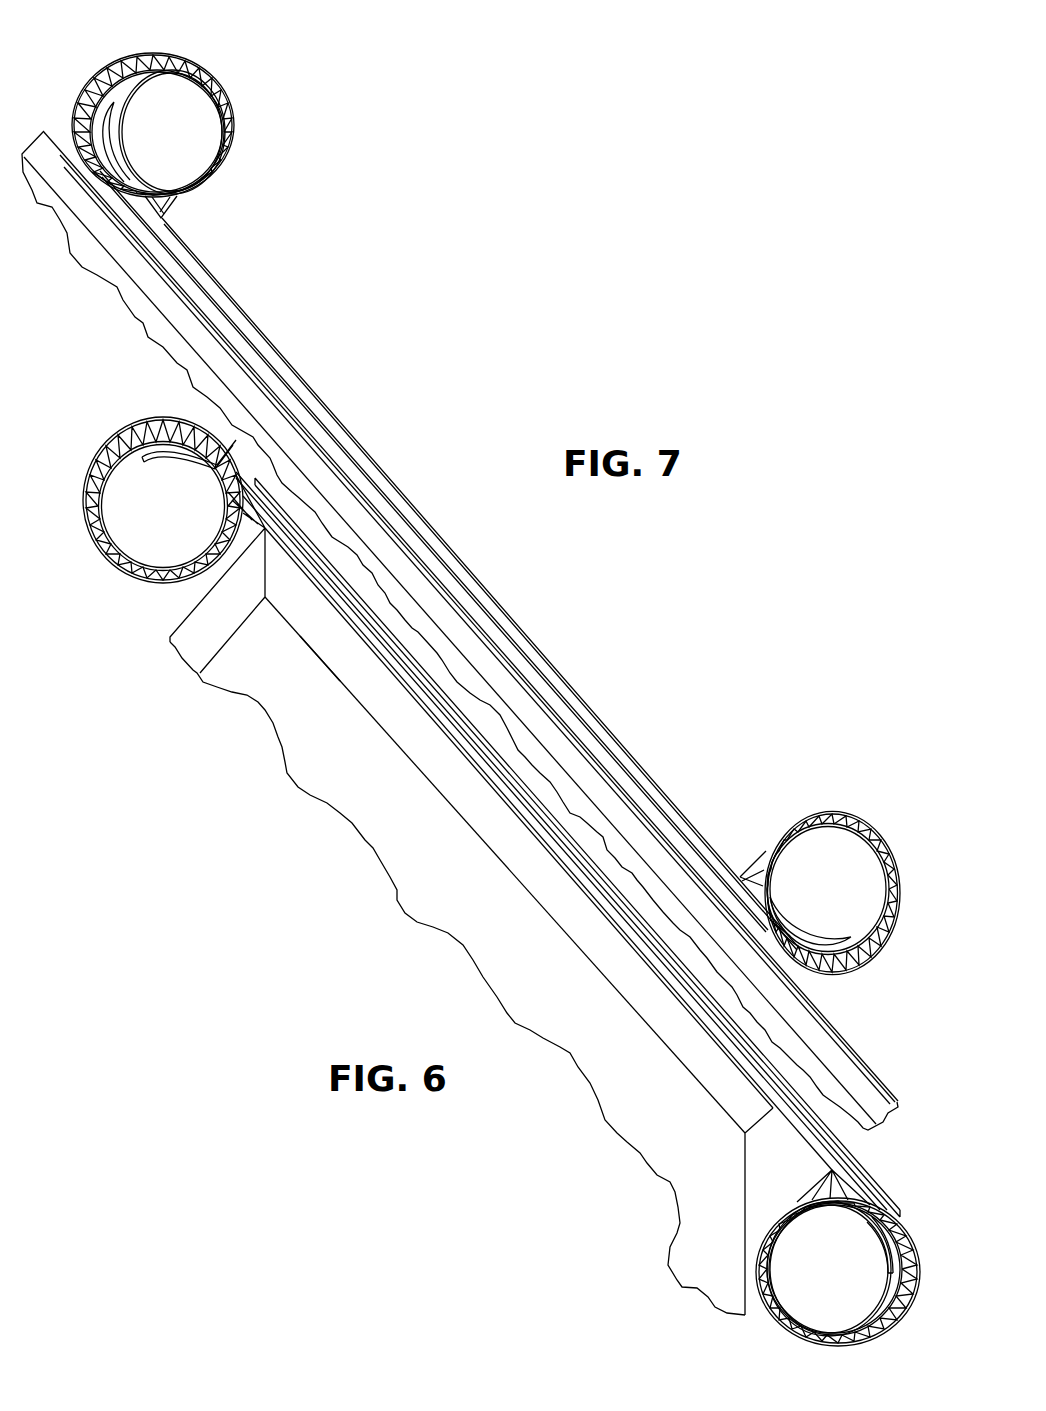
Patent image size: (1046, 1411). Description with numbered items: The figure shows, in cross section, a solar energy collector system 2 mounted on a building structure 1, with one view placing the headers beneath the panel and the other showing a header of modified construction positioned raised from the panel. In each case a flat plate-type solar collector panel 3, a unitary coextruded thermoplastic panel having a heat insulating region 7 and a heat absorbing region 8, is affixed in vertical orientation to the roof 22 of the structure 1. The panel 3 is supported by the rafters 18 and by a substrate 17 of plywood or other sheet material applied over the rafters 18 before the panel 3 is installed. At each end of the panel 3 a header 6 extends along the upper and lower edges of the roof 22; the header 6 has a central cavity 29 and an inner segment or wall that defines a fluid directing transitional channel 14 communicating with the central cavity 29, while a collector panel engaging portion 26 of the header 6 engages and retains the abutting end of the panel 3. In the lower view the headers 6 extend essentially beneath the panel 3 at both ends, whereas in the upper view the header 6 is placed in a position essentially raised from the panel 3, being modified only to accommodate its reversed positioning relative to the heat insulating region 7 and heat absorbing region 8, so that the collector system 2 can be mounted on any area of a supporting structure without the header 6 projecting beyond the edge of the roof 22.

In FIG. 7, the building structure 1 is at (460, 631).
In FIG. 6, the building structure 1 is at (471, 921).
In FIG. 7, the solar energy collector system 2 is at (470, 616).
In FIG. 7, the solar collector panel 3 is at (327, 408).
In FIG. 6, the solar collector panel 3 is at (378, 653).
In FIG. 7, the header 6 is at (232, 95).
In FIG. 6, the header 6 is at (92, 543).
In FIG. 7, the heat insulating region 7 is at (250, 335).
In FIG. 6, the heat insulating region 7 is at (303, 537).
In FIG. 7, the heat absorbing region 8 is at (470, 616).
In FIG. 6, the heat absorbing region 8 is at (320, 573).
In FIG. 7, the transitional channel 14 is at (113, 143).
In FIG. 6, the transitional channel 14 is at (158, 443).
In FIG. 7, the substrate 17 is at (157, 278).
In FIG. 6, the substrate 17 is at (400, 687).
In FIG. 6, the rafter 18 is at (410, 737).
In FIG. 7, the roof 22 is at (484, 628).
In FIG. 6, the roof 22 is at (325, 663).
In FIG. 7, the collector panel engaging portion 26 is at (117, 163).
In FIG. 7, the central cavity 29 is at (176, 90).
In FIG. 6, the central cavity 29 is at (153, 537).